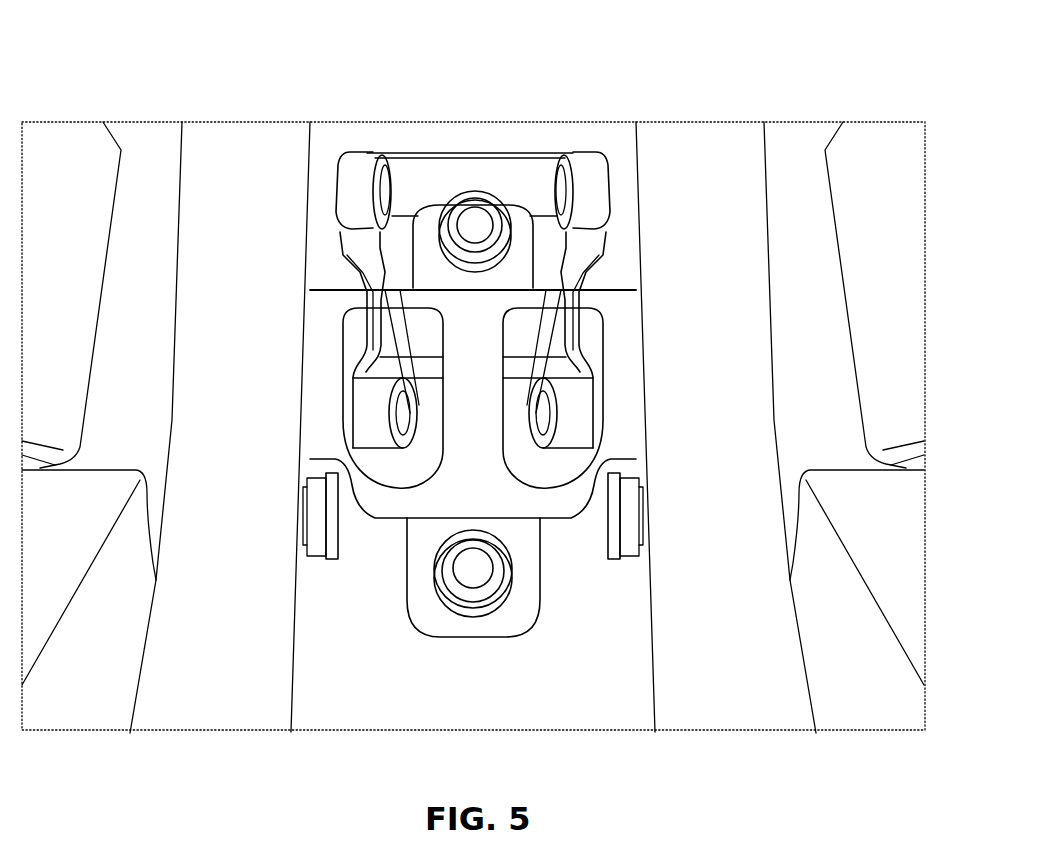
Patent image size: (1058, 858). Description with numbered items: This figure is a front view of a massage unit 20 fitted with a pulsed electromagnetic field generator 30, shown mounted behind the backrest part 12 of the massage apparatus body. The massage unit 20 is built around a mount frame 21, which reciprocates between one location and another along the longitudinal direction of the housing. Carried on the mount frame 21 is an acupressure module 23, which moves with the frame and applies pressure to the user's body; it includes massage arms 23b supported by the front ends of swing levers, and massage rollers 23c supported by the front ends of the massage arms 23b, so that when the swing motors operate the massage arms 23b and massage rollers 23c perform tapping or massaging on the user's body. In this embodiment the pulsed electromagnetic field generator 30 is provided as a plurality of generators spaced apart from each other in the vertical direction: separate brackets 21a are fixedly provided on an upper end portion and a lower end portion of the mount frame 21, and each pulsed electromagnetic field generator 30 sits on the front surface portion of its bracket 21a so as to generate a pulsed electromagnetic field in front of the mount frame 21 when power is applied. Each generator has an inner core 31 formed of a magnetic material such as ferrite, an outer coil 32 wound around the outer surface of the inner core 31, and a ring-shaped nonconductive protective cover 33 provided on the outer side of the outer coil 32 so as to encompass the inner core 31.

The backrest part 12 is at (247, 150).
The massage unit 20 is at (612, 357).
The mount frame 21 is at (632, 393).
The bracket 21a is at (522, 205).
The acupressure module 23 is at (236, 400).
The massage arm 23b is at (362, 253).
The massage roller 23c is at (362, 407).
The pulsed electromagnetic field generator 30 is at (453, 192).
The inner core 31 is at (474, 205).
The outer coil 32 is at (500, 202).
The protective cover 33 is at (440, 212).